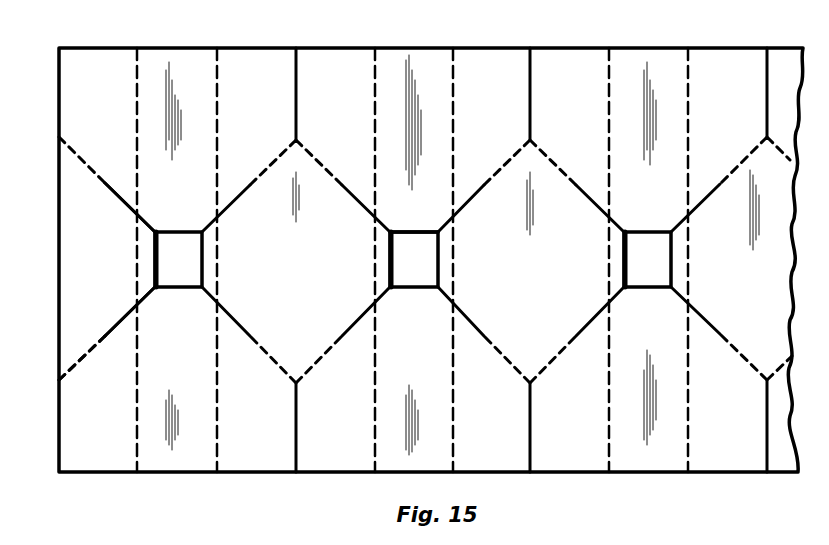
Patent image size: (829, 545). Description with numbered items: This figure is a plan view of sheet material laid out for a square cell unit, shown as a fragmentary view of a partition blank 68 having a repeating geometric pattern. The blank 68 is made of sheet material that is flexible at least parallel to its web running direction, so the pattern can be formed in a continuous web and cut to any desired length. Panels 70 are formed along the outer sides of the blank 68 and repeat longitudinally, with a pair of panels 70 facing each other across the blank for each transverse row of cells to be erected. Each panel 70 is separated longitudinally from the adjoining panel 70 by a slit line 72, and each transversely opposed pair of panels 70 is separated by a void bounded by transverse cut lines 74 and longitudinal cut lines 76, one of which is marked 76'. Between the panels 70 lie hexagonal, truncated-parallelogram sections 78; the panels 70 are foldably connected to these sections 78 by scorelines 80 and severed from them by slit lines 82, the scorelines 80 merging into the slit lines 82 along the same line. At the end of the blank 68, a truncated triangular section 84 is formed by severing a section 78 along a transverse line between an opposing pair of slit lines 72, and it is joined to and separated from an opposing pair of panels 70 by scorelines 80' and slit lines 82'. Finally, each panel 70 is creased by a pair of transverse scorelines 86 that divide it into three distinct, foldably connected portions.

The partition blank 68 is at (58, 447).
The panel 70 is at (166, 371).
The slit line 72 is at (296, 62).
The transverse cut line 74 is at (158, 280).
The longitudinal cut line 76 is at (414, 261).
The central square upper portion 76' is at (414, 245).
The hexagonal truncated-parallelogram section 78 is at (284, 275).
The scoreline 80 is at (425, 257).
The scoreline 80' is at (82, 353).
The slit line 82 is at (413, 259).
The slit line 82' is at (140, 259).
The truncated triangular section 84 is at (96, 275).
The transverse scoreline 86 is at (137, 68).